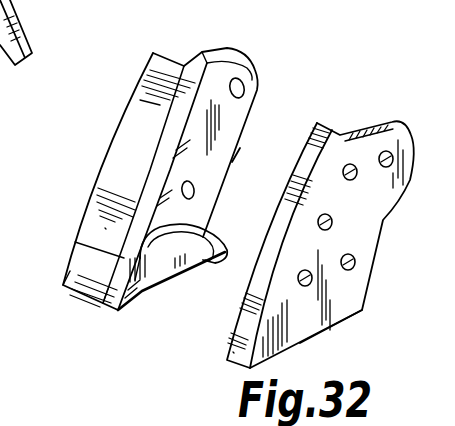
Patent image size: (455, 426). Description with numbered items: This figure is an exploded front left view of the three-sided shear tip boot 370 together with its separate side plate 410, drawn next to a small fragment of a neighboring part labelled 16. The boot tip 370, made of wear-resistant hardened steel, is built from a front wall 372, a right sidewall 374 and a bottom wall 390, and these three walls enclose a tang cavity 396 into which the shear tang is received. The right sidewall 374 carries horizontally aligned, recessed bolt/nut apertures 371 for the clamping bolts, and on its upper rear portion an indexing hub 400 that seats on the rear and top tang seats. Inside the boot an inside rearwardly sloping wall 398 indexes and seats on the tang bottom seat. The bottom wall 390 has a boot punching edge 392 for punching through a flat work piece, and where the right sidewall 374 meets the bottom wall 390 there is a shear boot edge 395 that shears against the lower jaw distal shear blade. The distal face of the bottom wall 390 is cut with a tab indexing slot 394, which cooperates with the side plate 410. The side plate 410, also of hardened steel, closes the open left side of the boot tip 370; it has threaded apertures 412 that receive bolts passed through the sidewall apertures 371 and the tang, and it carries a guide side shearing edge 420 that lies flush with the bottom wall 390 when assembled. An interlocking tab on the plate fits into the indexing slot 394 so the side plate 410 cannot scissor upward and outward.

The adjacent component 16 is at (16, 53).
The three-side shear tip boot 370 is at (331, 77).
The bolt/nut apertures 371 is at (229, 150).
The front wall 372 is at (116, 214).
The right sidewall 374 is at (238, 148).
The bottom wall 390 is at (161, 199).
The boot punching edge 392 is at (77, 300).
The tab indexing slot 394 is at (152, 297).
The shear boot edge 395 is at (206, 263).
The tang cavity 396 is at (167, 205).
The inside rearwardly sloping wall 398 is at (206, 229).
The indexing hub 400 is at (228, 142).
The side plate 410 is at (334, 219).
The threaded apertures 412 is at (333, 223).
The guide side shearing edge 420 is at (306, 347).